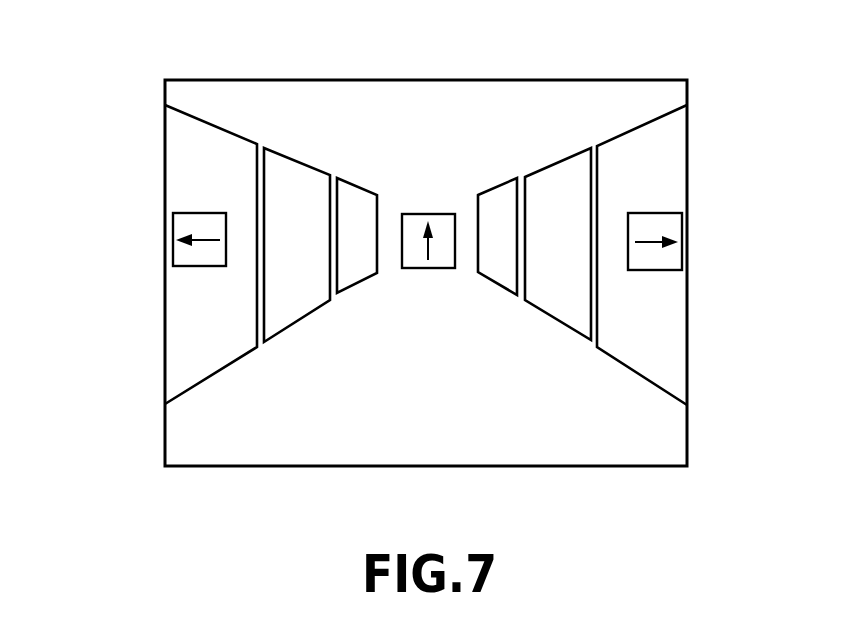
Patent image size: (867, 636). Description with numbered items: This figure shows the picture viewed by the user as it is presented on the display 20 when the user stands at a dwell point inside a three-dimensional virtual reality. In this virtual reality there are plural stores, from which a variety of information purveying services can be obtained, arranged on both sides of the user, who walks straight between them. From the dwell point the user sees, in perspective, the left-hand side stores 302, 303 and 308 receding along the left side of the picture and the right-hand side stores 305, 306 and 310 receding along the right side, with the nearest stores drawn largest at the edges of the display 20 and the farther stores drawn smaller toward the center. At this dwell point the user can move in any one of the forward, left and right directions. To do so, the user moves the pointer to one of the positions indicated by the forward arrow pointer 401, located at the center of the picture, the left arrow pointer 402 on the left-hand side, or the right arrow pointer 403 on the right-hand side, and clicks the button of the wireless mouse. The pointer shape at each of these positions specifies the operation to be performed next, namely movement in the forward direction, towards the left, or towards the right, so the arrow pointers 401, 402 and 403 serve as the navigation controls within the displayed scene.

The display 20 is at (687, 92).
The store 302 is at (230, 349).
The store 303 is at (303, 307).
The store 308 is at (354, 272).
The store 310 is at (498, 272).
The store 306 is at (562, 310).
The store 305 is at (648, 363).
The forward arrow pointer 401 is at (438, 220).
The left arrow pointer 402 is at (183, 223).
The right arrow pointer 403 is at (670, 255).